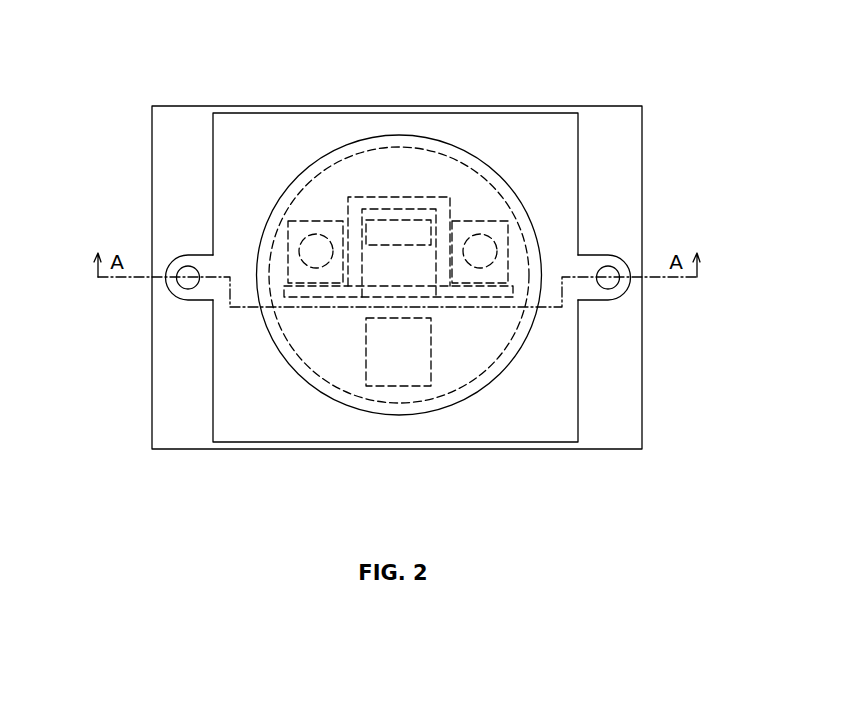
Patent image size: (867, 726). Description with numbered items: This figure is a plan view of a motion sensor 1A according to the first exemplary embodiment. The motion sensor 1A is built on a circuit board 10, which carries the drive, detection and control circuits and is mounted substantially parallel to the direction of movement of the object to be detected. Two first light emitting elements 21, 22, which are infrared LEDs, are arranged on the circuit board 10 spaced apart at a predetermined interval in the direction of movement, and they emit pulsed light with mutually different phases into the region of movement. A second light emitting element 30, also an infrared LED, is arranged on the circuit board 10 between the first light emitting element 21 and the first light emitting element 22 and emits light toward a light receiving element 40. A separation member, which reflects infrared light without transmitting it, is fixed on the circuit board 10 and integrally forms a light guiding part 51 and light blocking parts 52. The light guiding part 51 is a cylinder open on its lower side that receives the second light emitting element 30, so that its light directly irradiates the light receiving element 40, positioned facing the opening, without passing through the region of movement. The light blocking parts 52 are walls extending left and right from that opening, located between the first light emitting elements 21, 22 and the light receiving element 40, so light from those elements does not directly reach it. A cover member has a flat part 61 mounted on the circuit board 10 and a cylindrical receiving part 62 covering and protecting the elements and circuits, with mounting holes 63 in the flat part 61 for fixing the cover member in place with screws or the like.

The motion sensor 1A is at (661, 210).
The circuit board 10 is at (171, 172).
The first light emitting element 21 is at (315, 247).
The first light emitting element 22 is at (481, 248).
The second light emitting element 30 is at (407, 228).
The light receiving element 40 is at (390, 375).
The light guiding part 51 is at (395, 197).
The light blocking parts 52 is at (313, 297).
The flat part 61 is at (563, 190).
The cylindrical receiving part 62 is at (353, 145).
The mounting holes 63 is at (188, 283).